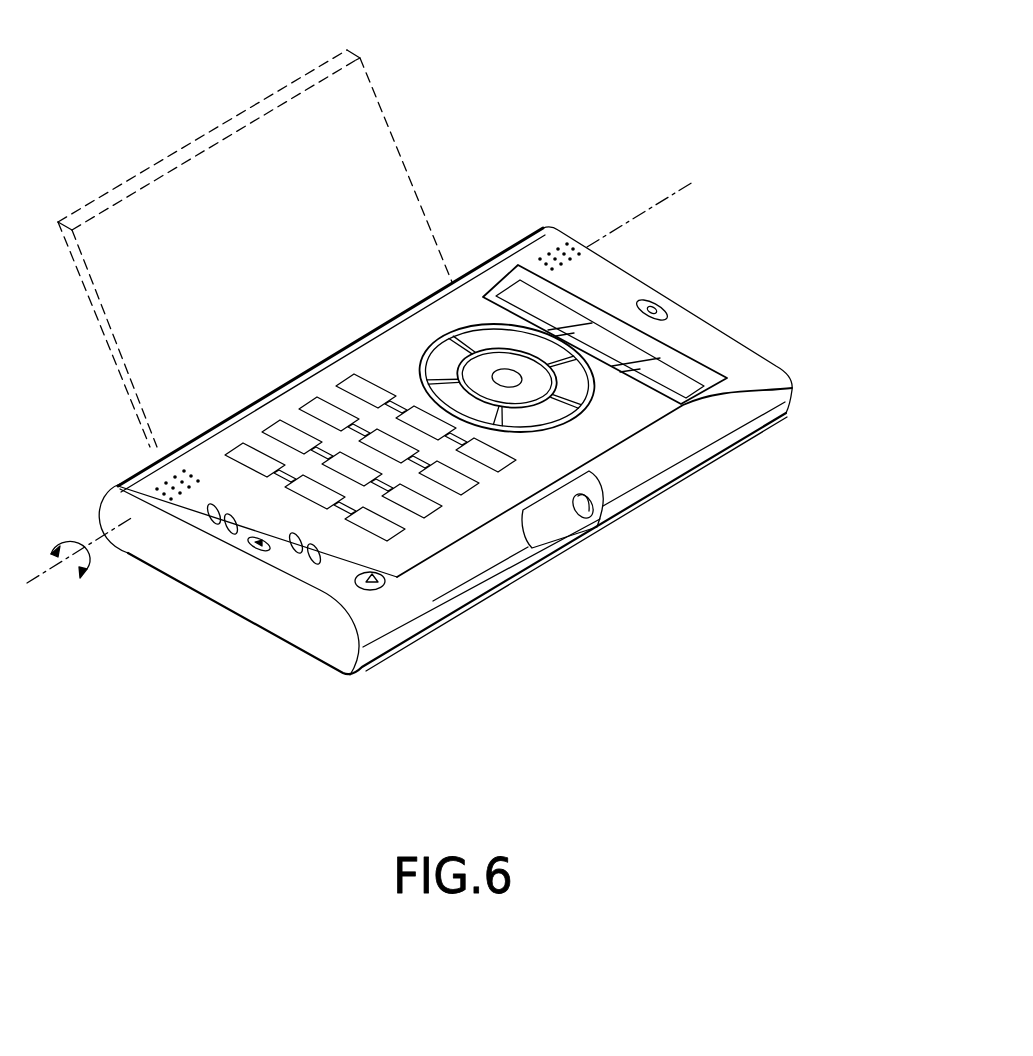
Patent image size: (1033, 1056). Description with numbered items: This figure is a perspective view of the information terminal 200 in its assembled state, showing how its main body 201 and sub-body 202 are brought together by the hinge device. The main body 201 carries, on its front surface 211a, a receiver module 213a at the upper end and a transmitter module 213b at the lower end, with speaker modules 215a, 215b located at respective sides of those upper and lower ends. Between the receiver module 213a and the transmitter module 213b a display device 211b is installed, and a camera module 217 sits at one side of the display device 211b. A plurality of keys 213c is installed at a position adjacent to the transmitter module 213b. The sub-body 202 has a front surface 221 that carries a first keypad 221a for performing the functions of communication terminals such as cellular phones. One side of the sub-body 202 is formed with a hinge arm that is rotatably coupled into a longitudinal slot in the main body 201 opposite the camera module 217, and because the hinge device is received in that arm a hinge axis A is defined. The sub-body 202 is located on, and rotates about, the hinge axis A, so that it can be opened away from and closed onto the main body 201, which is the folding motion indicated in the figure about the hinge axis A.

The information terminal 200 is at (714, 104).
The main body 201 is at (713, 309).
The sub-body 202 is at (294, 357).
The front surface 211a is at (738, 347).
The display device 211b is at (682, 388).
The receiver module 213a is at (648, 305).
The transmitter module 213b is at (257, 551).
The keys 213c is at (231, 534).
The speaker module 215a is at (560, 248).
The speaker module 215b is at (165, 487).
The camera module 217 is at (590, 521).
The front surface 221 is at (336, 401).
The first keypad 221a is at (367, 393).
The hinge axis A is at (47, 575).